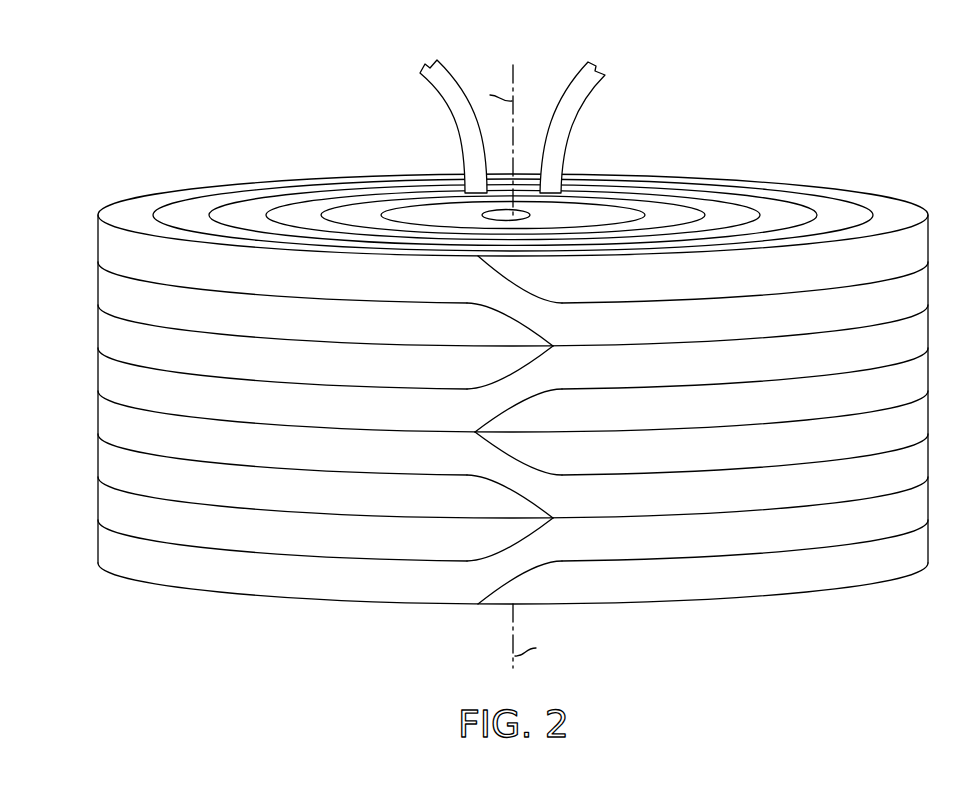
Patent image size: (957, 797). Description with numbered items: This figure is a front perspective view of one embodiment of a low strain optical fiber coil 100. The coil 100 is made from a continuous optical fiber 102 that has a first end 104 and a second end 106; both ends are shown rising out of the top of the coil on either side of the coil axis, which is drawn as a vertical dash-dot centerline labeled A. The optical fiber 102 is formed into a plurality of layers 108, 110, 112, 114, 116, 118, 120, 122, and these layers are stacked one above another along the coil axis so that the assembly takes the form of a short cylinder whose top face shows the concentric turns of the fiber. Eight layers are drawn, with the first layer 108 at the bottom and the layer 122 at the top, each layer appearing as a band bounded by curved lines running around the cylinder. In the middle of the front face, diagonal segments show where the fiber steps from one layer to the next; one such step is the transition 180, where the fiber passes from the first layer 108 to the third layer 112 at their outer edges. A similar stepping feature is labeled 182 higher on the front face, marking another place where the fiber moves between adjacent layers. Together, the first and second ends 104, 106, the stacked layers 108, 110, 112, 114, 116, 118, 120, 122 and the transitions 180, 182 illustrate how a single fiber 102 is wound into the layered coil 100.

The low strain optical fiber coil 100 is at (490, 340).
The continuous optical fiber 102 is at (908, 214).
The first end 104 is at (456, 117).
The second end 106 is at (583, 80).
The first layer 108 is at (483, 566).
The second layer 110 is at (100, 508).
The third layer 112 is at (483, 480).
The fourth layer 114 is at (100, 423).
The layer 116 is at (100, 381).
The layer 118 is at (100, 338).
The layer 120 is at (100, 294).
The layer 122 is at (100, 249).
The transition 180 is at (512, 578).
The layer transition segment 182 is at (507, 490).